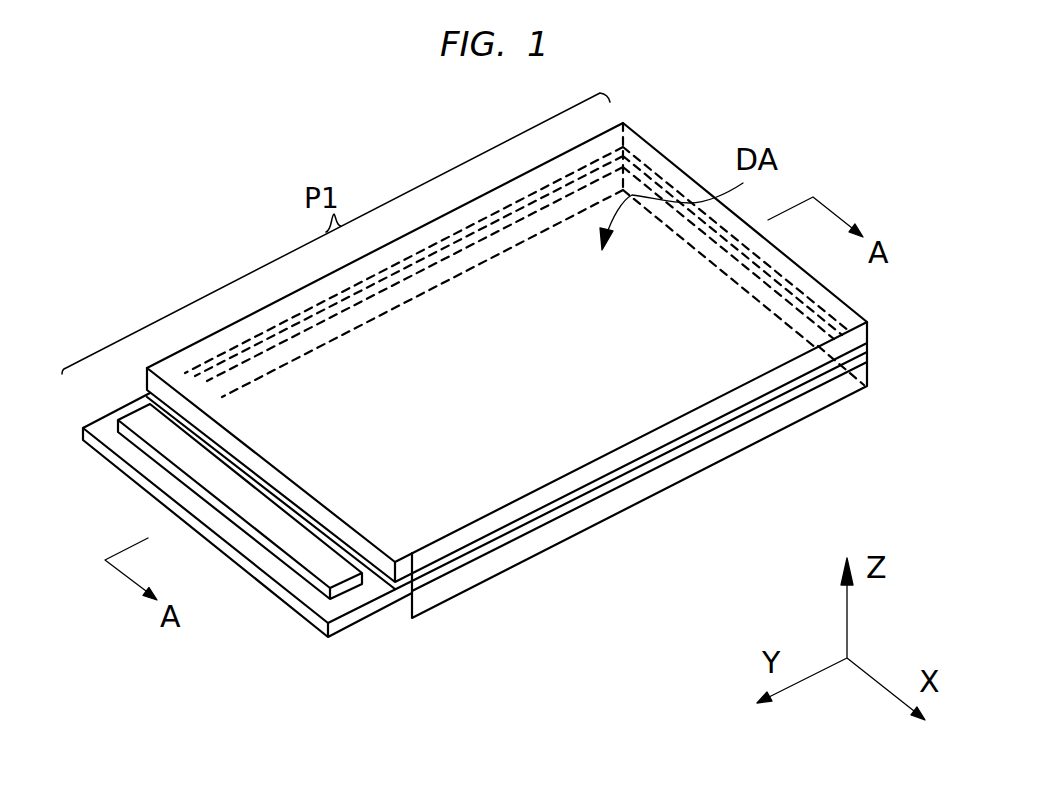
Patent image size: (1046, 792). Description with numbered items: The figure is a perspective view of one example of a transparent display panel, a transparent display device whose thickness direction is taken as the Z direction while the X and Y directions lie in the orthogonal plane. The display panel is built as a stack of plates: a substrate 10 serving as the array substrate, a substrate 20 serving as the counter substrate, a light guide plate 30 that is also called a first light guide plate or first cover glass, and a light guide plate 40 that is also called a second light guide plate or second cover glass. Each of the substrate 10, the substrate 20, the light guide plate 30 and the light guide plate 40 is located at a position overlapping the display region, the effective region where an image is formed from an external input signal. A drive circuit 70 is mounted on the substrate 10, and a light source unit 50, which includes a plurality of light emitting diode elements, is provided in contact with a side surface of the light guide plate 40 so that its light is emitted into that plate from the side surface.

The substrate 10 is at (678, 457).
The substrate 20 is at (718, 422).
The light guide plate 30 is at (633, 490).
The light guide plate 40 is at (763, 387).
The light source unit 50 is at (402, 572).
The drive circuit 70 is at (317, 555).